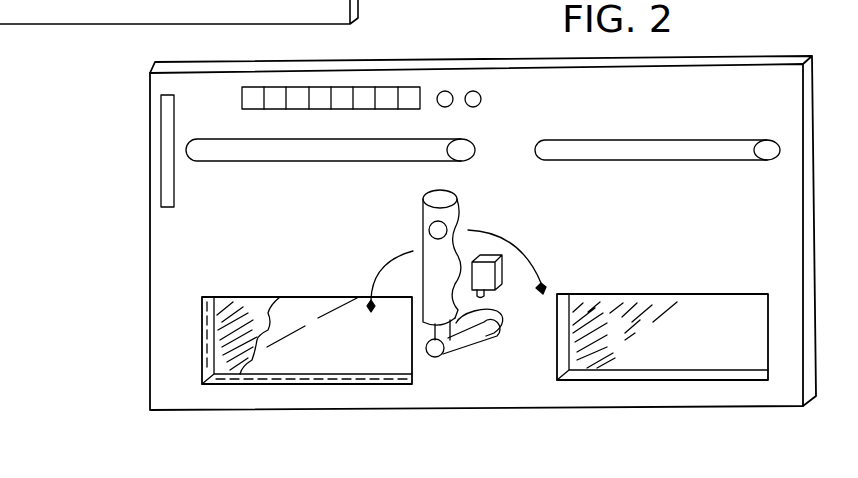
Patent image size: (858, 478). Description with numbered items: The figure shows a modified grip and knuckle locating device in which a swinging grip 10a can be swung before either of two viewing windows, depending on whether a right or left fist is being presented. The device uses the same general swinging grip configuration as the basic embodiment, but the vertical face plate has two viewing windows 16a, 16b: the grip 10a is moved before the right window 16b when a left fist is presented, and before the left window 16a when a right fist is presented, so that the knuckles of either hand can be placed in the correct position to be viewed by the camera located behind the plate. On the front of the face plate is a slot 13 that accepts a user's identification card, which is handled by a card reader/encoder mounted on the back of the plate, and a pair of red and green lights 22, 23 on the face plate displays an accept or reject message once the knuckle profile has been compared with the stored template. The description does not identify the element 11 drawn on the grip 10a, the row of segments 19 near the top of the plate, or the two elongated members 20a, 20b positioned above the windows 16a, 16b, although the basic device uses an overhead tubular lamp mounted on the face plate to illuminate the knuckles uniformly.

The rotating member 10a is at (428, 213).
The hole 11 is at (429, 232).
The slot 13 is at (161, 133).
The left viewing window 16a is at (290, 297).
The right viewing window 16b is at (678, 294).
The display 19 is at (368, 87).
The slot 20a is at (258, 152).
The slot 20b is at (662, 152).
The red light 22 is at (445, 91).
The green light 23 is at (473, 91).